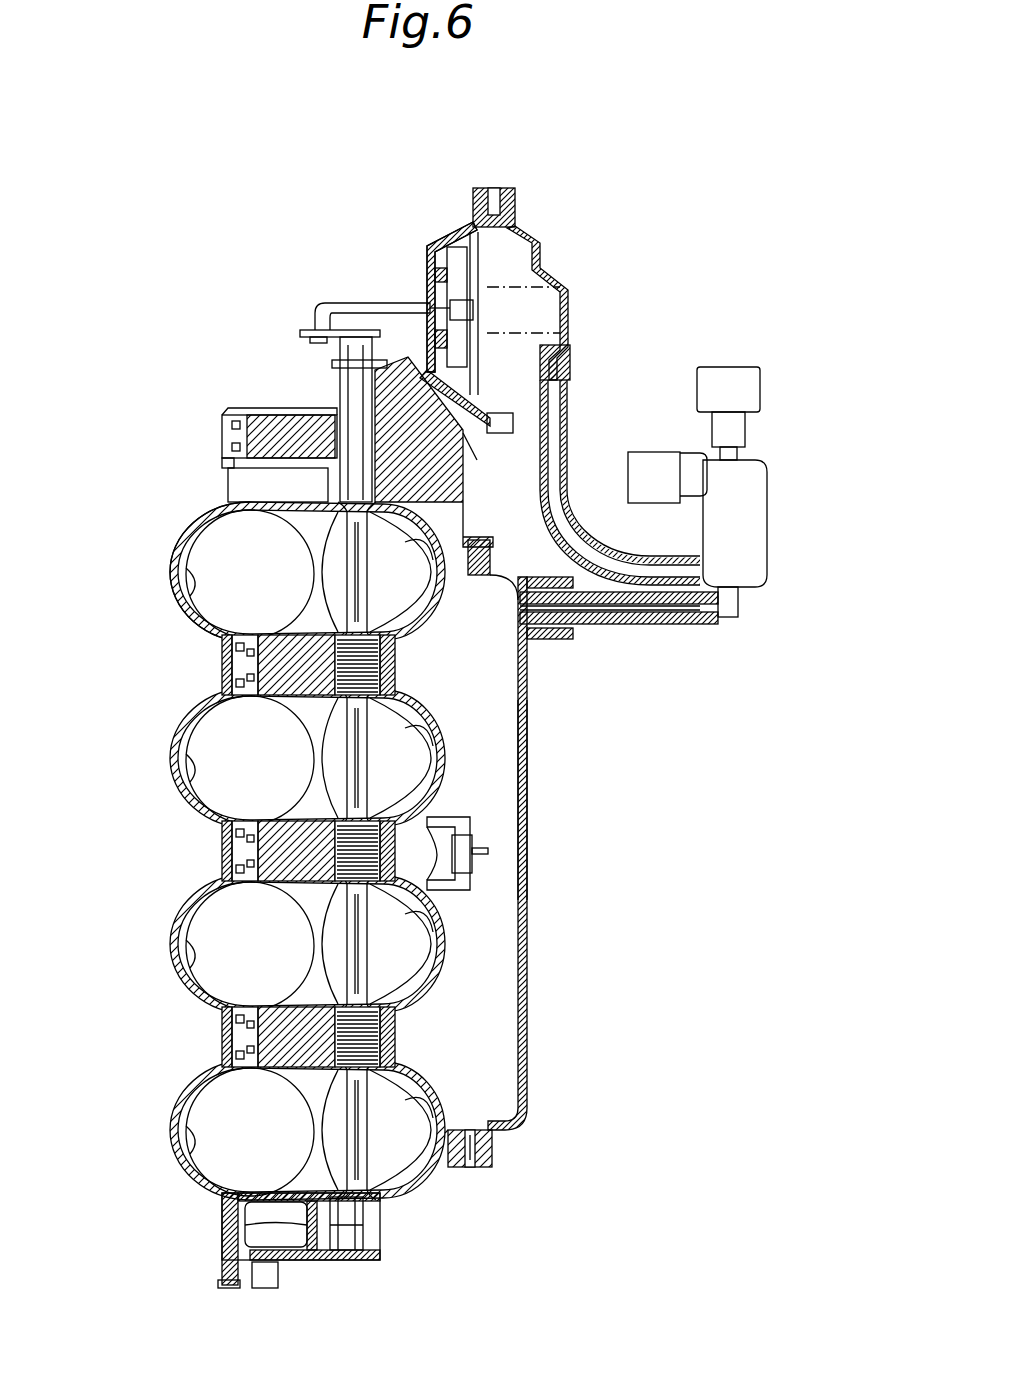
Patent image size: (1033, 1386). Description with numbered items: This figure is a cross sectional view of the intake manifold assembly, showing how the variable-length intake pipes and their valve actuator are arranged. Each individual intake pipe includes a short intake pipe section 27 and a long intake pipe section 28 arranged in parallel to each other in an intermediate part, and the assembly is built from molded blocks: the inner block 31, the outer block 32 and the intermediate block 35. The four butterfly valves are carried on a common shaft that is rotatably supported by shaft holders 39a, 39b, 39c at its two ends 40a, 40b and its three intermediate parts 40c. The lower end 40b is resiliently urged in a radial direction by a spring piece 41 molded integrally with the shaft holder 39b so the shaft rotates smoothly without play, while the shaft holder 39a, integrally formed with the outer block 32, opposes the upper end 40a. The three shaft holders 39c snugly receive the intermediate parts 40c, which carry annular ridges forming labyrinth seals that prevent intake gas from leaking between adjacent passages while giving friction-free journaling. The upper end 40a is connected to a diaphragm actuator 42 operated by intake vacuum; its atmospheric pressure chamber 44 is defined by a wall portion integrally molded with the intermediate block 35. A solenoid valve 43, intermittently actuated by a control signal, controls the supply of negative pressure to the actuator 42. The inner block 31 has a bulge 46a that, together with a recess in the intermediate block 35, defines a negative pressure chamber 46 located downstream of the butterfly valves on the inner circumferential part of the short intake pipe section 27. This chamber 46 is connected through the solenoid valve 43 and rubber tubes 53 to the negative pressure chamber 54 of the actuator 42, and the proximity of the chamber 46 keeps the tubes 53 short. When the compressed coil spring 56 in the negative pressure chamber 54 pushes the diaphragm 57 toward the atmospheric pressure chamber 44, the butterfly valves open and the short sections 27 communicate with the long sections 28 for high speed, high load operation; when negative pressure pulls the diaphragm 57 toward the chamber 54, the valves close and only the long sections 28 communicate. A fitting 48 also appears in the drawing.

The short intake pipe section 27 is at (412, 598).
The long intake pipe section 28 is at (190, 576).
The inner block 31 is at (536, 1075).
The outer block 32 is at (176, 520).
The intermediate block 35 is at (468, 500).
The shaft holder 39a is at (252, 438).
The shaft holder 39b is at (225, 1222).
The shaft holder 39c is at (245, 668).
The shaft end 40a is at (343, 394).
The shaft end 40b is at (367, 1213).
The intermediate shaft part 40c is at (357, 665).
The spring piece 41 is at (330, 1228).
The diaphragm actuator 42 is at (534, 222).
The solenoid valve 43 is at (768, 528).
The atmospheric pressure chamber 44 is at (458, 243).
The negative pressure chamber 46 is at (464, 750).
The bulge 46a is at (530, 790).
The connector 48 is at (488, 866).
The rubber tubes 53 is at (620, 622).
The negative pressure chamber 54 is at (541, 259).
The compressed coil spring 56 is at (570, 350).
The diaphragm 57 is at (558, 395).